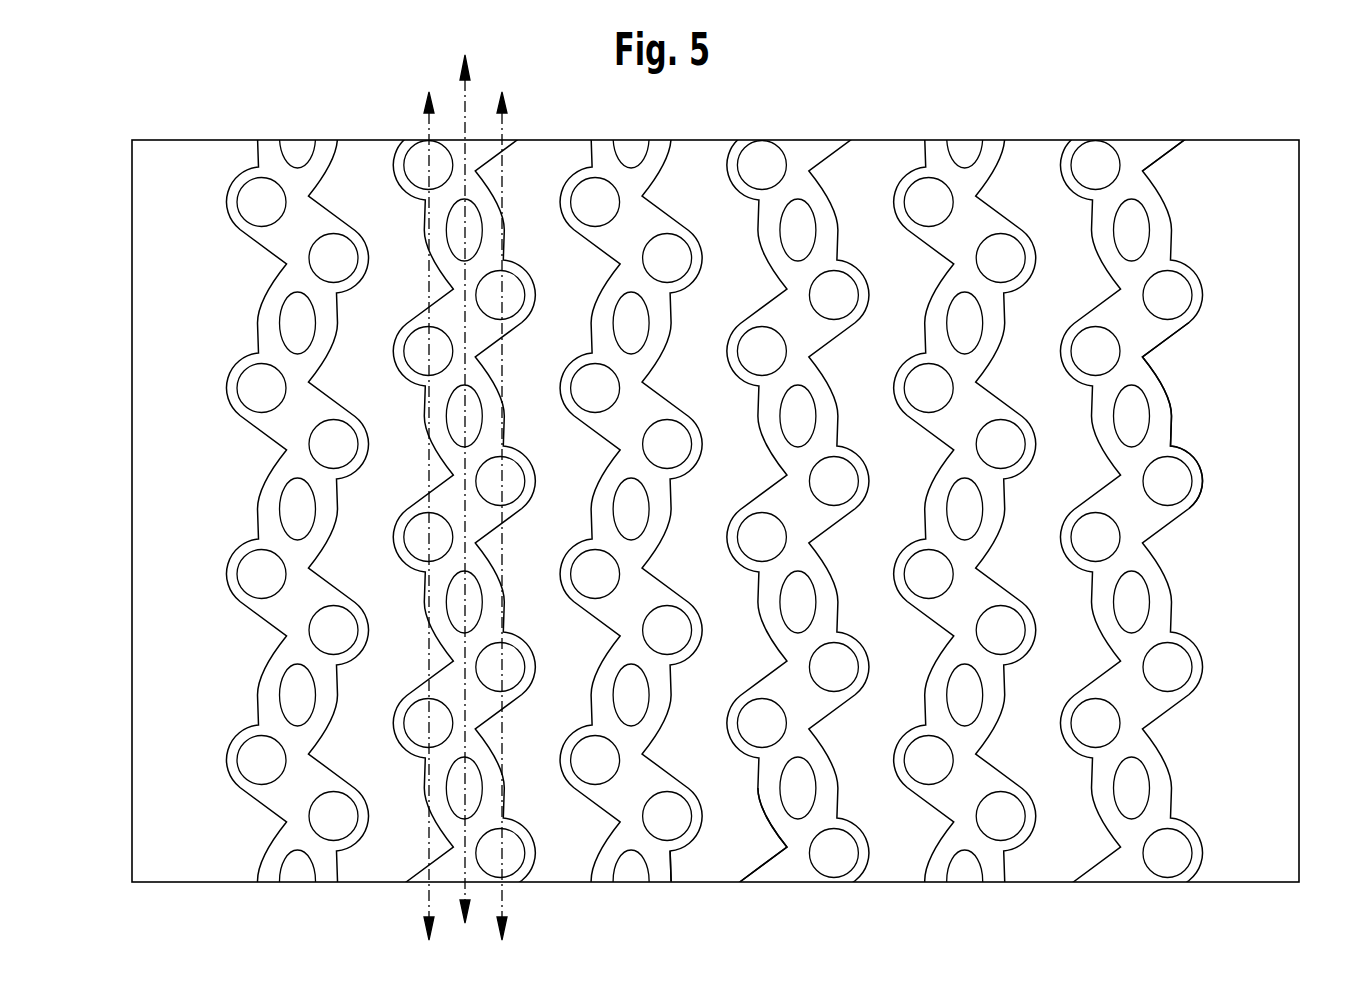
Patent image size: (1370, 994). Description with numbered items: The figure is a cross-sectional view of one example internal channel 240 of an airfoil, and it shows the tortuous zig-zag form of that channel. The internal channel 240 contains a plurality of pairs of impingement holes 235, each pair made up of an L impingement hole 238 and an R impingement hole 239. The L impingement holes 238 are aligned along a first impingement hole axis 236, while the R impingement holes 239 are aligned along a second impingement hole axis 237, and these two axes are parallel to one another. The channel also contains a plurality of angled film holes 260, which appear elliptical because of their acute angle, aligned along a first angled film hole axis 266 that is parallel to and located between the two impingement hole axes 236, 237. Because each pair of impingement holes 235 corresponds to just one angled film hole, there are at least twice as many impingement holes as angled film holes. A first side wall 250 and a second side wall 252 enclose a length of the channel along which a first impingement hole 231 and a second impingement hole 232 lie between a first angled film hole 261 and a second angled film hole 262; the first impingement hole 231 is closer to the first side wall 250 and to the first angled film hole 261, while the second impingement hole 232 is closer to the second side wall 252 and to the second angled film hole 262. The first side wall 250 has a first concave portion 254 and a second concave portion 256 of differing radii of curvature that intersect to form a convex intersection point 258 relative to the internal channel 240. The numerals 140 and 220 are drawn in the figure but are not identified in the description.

The elongated opening 140 is at (797, 199).
The circular opening 220 is at (1177, 867).
The first impingement hole 231 is at (1194, 671).
The second impingement hole 232 is at (1119, 742).
The pairs of impingement holes 235 is at (310, 260).
The first impingement hole axis 236 is at (428, 903).
The second impingement hole axis 237 is at (502, 905).
The L impingement hole 238 is at (1113, 363).
The R impingement hole 239 is at (1193, 293).
The internal channel 240 is at (787, 868).
The first side wall 250 is at (1157, 155).
The second side wall 252 is at (1067, 155).
The first concave portion 254 is at (1170, 390).
The second concave portion 256 is at (1198, 500).
The convex intersection point 258 is at (1172, 442).
The angled film holes 260 is at (287, 673).
The first angled film hole 261 is at (1148, 590).
The second angled film hole 262 is at (1148, 798).
The first angled film hole axis 266 is at (465, 90).